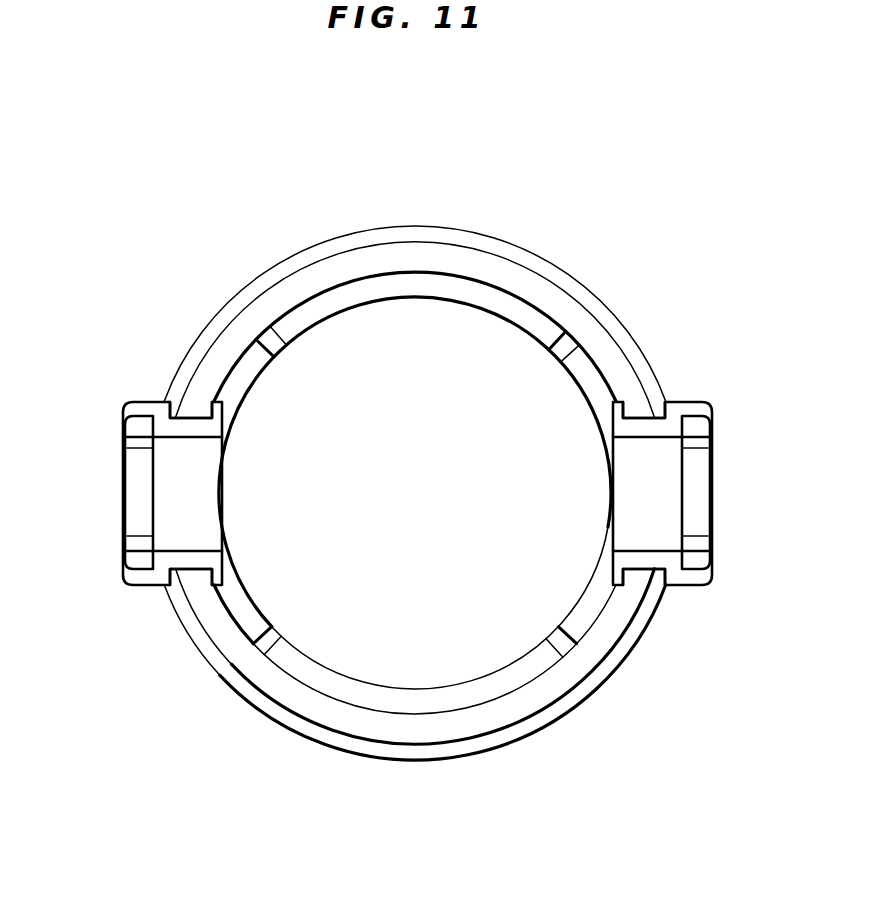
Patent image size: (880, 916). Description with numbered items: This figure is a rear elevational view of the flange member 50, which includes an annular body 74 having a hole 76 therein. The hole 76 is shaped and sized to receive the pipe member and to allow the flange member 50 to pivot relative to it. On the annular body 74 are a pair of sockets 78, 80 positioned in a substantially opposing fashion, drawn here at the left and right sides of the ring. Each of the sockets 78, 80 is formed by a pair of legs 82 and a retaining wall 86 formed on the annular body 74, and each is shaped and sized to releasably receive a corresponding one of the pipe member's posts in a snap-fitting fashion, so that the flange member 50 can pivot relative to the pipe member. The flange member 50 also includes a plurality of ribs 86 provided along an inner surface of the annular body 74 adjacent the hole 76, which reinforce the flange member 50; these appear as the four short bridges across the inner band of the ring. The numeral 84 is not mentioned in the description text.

The flange member 50 is at (417, 459).
The annular body 74 is at (322, 240).
The hole 76 is at (414, 668).
The socket 78 is at (200, 497).
The socket 80 is at (632, 496).
The legs 82 is at (182, 412).
The pad 84 is at (135, 491).
The ribs 86 is at (258, 336).